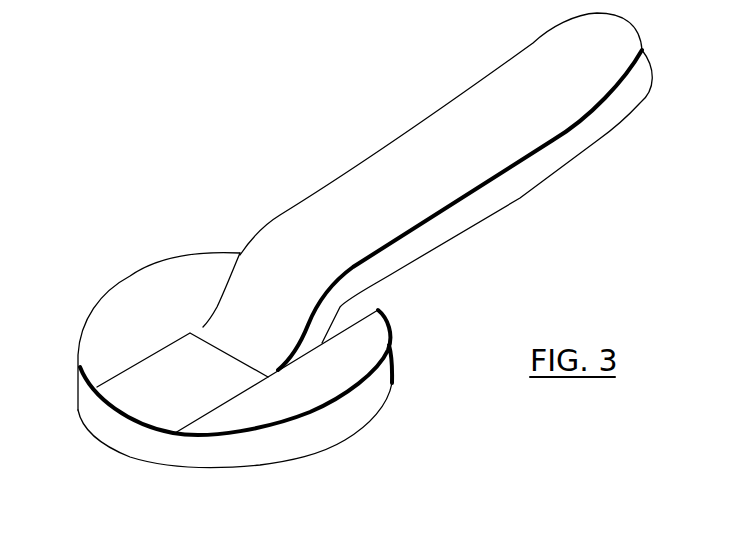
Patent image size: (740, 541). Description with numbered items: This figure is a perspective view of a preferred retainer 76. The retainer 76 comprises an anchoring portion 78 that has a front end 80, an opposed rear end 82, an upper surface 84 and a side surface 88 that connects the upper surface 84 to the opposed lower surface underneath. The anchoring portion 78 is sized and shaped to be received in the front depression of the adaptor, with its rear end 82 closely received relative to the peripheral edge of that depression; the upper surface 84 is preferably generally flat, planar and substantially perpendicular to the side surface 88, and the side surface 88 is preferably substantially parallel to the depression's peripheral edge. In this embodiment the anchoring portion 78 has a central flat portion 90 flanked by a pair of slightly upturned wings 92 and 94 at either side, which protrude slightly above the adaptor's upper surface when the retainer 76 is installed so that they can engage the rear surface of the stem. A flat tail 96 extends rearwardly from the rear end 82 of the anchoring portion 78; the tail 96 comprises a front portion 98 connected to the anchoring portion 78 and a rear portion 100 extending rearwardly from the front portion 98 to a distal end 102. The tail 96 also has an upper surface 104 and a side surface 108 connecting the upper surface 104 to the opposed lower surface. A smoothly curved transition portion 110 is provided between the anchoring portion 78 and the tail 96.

The retainer 76 is at (210, 177).
The anchoring portion 78 is at (103, 282).
The front end 80 is at (83, 417).
The rear end 82 is at (393, 325).
The upper surface 84 is at (163, 280).
The side surface 88 is at (340, 417).
The central flat portion 90 is at (127, 388).
The wing 92 is at (105, 322).
The wing 94 is at (250, 417).
The tail 96 is at (365, 152).
The front portion 98 is at (325, 198).
The rear portion 100 is at (555, 58).
The distal end 102 is at (648, 50).
The upper surface 104 is at (503, 145).
The side surface 108 is at (467, 210).
The transition portion 110 is at (270, 255).